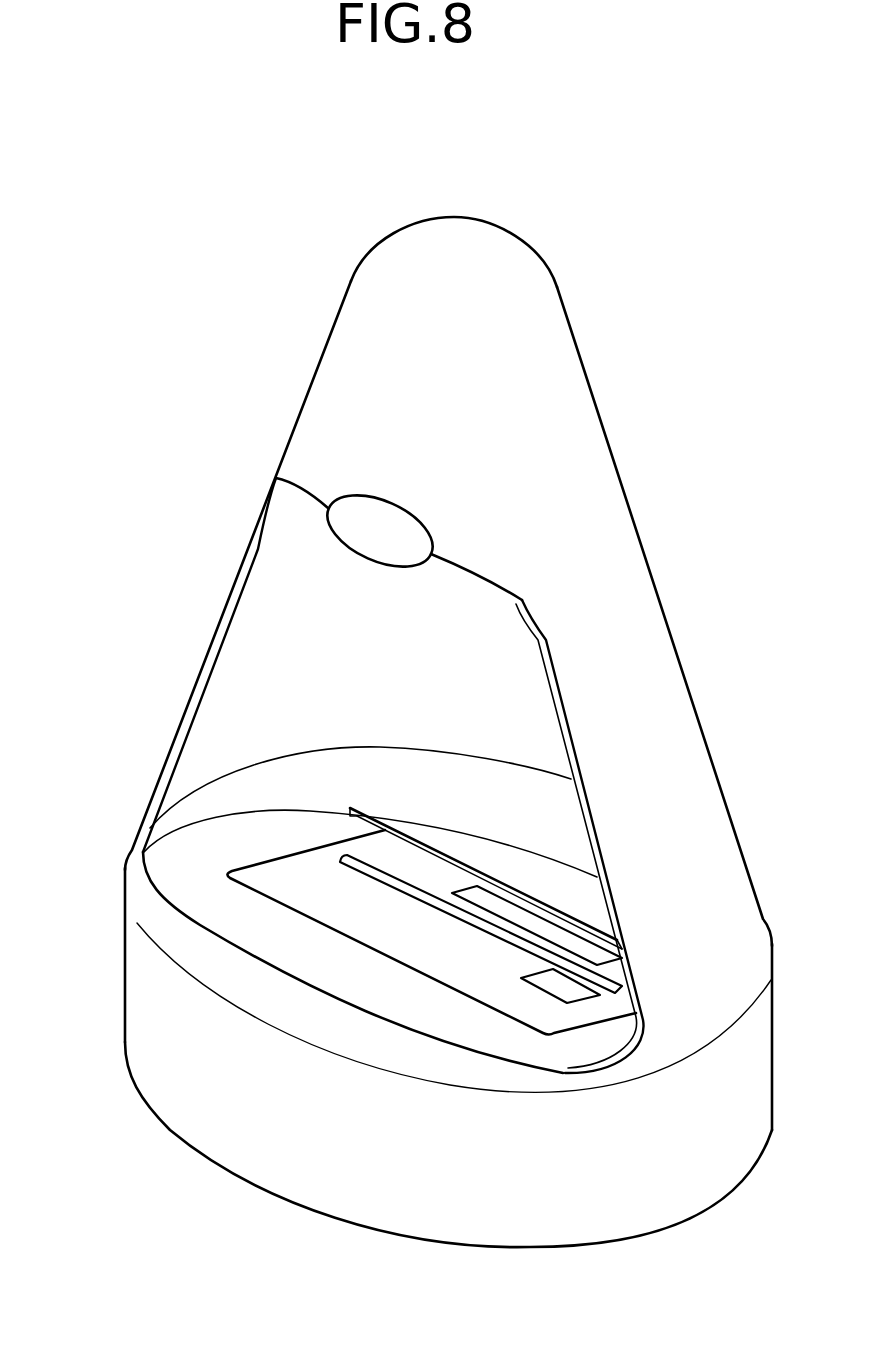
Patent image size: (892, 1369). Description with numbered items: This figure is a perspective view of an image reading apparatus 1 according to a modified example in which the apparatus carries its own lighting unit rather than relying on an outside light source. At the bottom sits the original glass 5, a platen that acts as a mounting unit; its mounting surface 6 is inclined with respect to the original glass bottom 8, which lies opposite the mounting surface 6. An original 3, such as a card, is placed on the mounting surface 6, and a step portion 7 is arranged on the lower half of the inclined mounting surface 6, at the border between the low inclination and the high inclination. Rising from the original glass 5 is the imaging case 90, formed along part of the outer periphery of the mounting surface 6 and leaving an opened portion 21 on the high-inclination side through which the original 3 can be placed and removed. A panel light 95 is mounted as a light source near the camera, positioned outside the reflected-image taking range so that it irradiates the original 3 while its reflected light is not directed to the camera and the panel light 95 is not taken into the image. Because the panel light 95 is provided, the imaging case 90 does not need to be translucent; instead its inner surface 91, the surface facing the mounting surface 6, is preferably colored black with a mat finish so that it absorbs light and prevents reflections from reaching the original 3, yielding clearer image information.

The image reading apparatus 1 is at (250, 192).
The original 3 is at (363, 915).
The original glass 5 is at (384, 1202).
The mounting surface 6 is at (200, 892).
The step portion 7 is at (352, 815).
The original glass bottom 8 is at (519, 1262).
The opened portion 21 is at (253, 530).
The imaging case 90 is at (643, 537).
The inner surface 91 is at (304, 660).
The panel light 95 is at (360, 506).